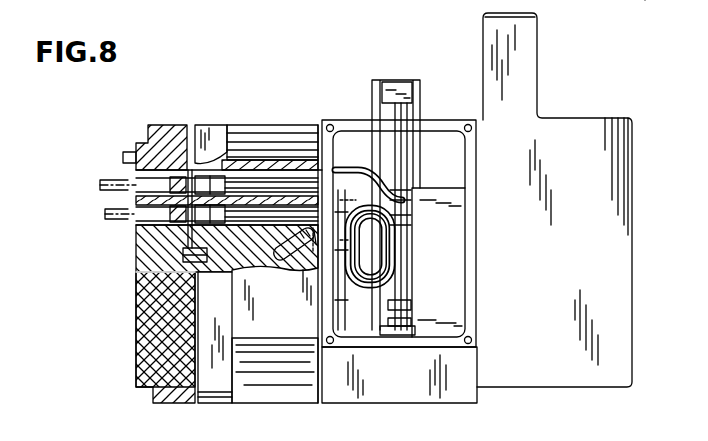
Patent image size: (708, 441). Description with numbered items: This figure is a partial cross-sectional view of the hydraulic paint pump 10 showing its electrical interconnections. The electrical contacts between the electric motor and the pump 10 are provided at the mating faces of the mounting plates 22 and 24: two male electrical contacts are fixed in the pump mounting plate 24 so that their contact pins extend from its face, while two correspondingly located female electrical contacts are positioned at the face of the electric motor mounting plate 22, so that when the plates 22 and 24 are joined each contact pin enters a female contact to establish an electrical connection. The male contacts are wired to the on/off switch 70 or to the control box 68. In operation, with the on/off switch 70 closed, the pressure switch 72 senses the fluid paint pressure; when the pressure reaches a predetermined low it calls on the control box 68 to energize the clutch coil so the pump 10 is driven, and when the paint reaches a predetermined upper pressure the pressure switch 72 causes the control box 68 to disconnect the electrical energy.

The pump 10 is at (588, 92).
The electric motor mounting plate 22 is at (172, 125).
The pump mounting plate 24 is at (197, 125).
The control box 68 is at (446, 258).
The on/off switch 70 is at (284, 254).
The pressure switch 72 is at (392, 80).